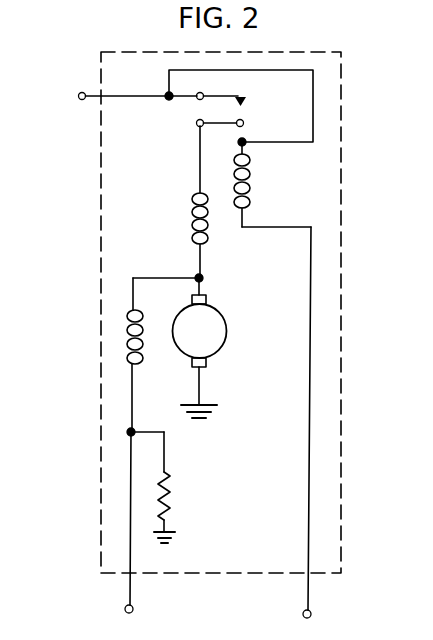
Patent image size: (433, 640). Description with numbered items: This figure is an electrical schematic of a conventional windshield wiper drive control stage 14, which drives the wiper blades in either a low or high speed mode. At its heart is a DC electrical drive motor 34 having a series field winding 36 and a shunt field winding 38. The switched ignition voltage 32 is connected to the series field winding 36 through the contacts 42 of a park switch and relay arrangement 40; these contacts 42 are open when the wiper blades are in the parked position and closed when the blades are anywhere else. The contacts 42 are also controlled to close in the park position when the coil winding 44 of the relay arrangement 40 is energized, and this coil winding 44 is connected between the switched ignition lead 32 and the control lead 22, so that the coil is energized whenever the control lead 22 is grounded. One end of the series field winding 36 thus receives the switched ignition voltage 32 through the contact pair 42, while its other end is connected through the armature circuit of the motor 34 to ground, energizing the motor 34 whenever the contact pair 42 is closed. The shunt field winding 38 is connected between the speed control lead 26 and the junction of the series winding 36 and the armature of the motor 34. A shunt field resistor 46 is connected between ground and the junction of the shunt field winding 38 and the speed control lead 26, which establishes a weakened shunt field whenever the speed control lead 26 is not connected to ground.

The wiper drive control stage 14 is at (350, 222).
The control lead 22 is at (311, 612).
The speed control lead 26 is at (133, 606).
The switched ignition voltage 32 is at (82, 92).
The DC electrical drive motor 34 is at (176, 345).
The series field winding 36 is at (193, 212).
The shunt field winding 38 is at (90, 333).
The park switch and relay arrangement 40 is at (293, 107).
The contacts 42 is at (186, 108).
The coil winding 44 is at (252, 183).
The shunt field resistor 46 is at (170, 499).